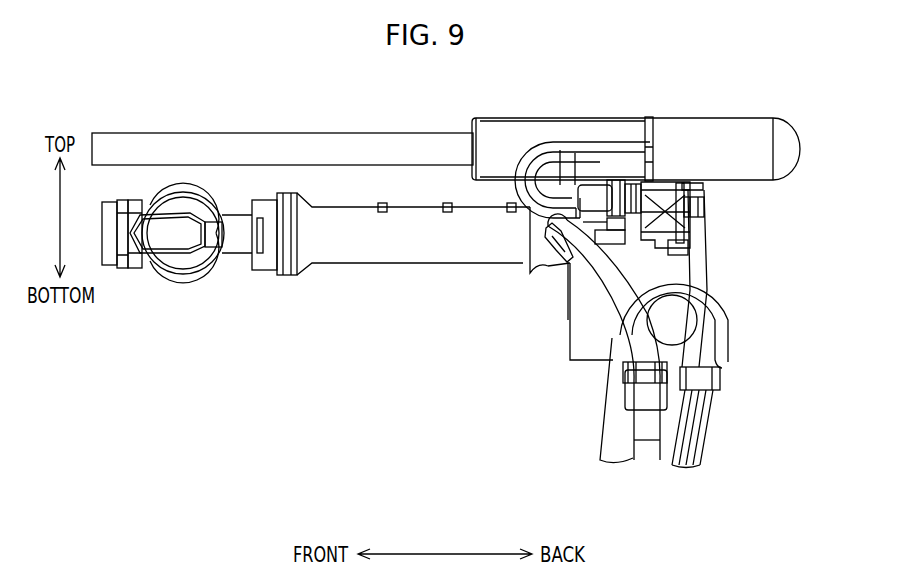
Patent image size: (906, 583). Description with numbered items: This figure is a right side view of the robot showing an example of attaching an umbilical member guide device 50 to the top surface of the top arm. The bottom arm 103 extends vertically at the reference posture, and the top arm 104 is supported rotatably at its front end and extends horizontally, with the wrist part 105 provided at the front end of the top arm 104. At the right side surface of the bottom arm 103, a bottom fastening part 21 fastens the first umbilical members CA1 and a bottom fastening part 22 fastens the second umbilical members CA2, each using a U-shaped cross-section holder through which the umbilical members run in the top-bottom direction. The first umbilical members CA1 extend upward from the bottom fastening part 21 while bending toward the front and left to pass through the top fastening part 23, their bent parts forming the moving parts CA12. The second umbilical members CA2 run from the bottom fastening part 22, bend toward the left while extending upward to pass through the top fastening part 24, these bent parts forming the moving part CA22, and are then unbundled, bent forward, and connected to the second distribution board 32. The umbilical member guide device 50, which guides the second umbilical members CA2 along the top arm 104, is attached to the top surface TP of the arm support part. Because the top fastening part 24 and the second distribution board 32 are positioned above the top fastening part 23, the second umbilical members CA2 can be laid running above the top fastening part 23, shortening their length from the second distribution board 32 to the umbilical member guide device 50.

The umbilical member guide device 50 is at (697, 117).
The top end face TP is at (512, 136).
The second umbilical members CA2 is at (575, 153).
The second distribution board 32 is at (617, 182).
The top fastening part 24 is at (704, 206).
The moving part CA22 is at (707, 260).
The top fastening part 23 is at (545, 232).
The moving parts CA12 is at (617, 287).
The bottom fastening part 21 is at (642, 370).
The bottom fastening part 22 is at (720, 380).
The bottom arm 103 is at (600, 443).
The first umbilical members CA1 is at (647, 447).
The top arm 104 is at (364, 266).
The wrist part 105 is at (196, 276).